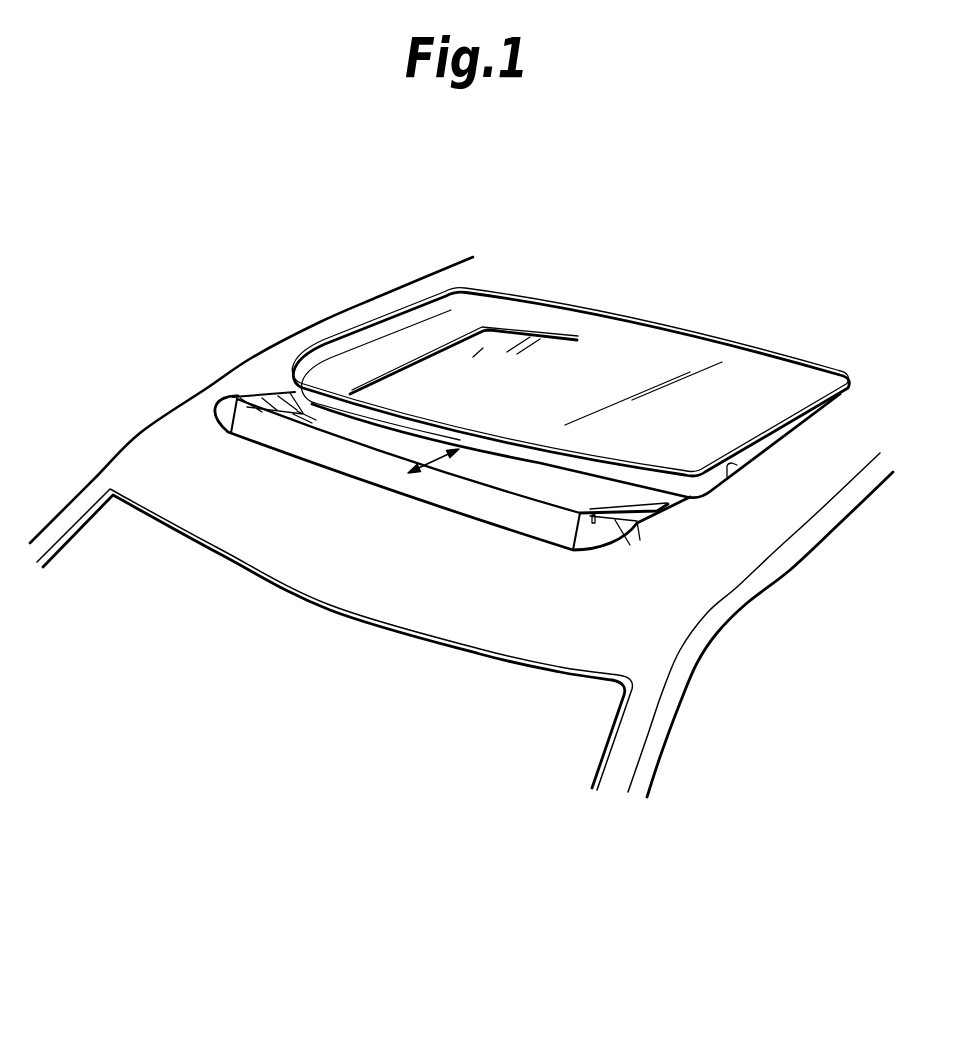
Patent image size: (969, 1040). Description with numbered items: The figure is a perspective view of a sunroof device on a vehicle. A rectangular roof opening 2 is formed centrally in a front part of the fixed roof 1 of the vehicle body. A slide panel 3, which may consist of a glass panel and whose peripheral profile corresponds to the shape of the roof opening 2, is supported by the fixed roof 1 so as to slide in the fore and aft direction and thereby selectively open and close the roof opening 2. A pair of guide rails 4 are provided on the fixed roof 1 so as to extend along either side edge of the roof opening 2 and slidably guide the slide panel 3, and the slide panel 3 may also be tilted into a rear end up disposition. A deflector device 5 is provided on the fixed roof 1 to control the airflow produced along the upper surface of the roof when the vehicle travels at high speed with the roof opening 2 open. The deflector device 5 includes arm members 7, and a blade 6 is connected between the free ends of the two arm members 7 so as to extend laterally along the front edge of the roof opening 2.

The fixed roof 1 is at (688, 573).
The roof opening 2 is at (734, 466).
The slide panel 3 is at (628, 344).
The guide rails 4 is at (253, 397).
The deflector device 5 is at (456, 525).
The blade 6 is at (313, 465).
The arm member 7 is at (612, 521).